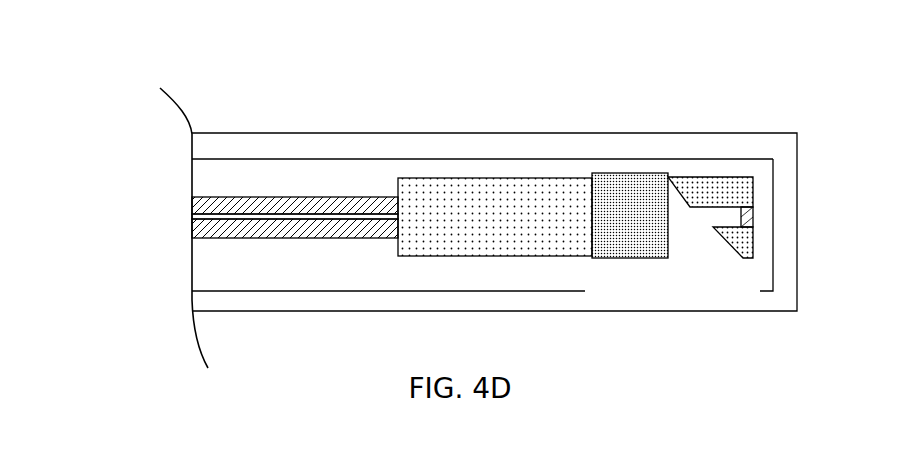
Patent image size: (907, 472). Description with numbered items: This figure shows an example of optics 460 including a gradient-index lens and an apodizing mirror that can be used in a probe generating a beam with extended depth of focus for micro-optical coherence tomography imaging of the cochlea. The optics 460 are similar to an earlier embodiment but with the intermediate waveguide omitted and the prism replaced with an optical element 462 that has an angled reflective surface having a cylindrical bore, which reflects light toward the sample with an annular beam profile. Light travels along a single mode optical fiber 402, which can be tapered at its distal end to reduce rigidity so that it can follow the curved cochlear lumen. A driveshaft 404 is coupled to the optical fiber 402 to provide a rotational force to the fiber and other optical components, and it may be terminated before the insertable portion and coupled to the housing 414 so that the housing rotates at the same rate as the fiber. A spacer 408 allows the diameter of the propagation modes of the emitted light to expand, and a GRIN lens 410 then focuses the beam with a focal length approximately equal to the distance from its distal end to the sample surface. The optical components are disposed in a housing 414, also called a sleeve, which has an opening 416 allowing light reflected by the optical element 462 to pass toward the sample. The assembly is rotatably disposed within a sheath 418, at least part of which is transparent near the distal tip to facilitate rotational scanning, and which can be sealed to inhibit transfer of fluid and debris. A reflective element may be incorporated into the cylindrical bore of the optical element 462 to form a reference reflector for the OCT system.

The optics 460 is at (485, 41).
The sheath 418 is at (239, 130).
The housing 414 is at (304, 293).
The opening 416 is at (684, 290).
The driveshaft 404 is at (356, 195).
The single mode optical fiber 402 is at (188, 216).
The spacer 408 is at (511, 176).
The GRIN lens 410 is at (626, 171).
The optical element 462 is at (757, 179).